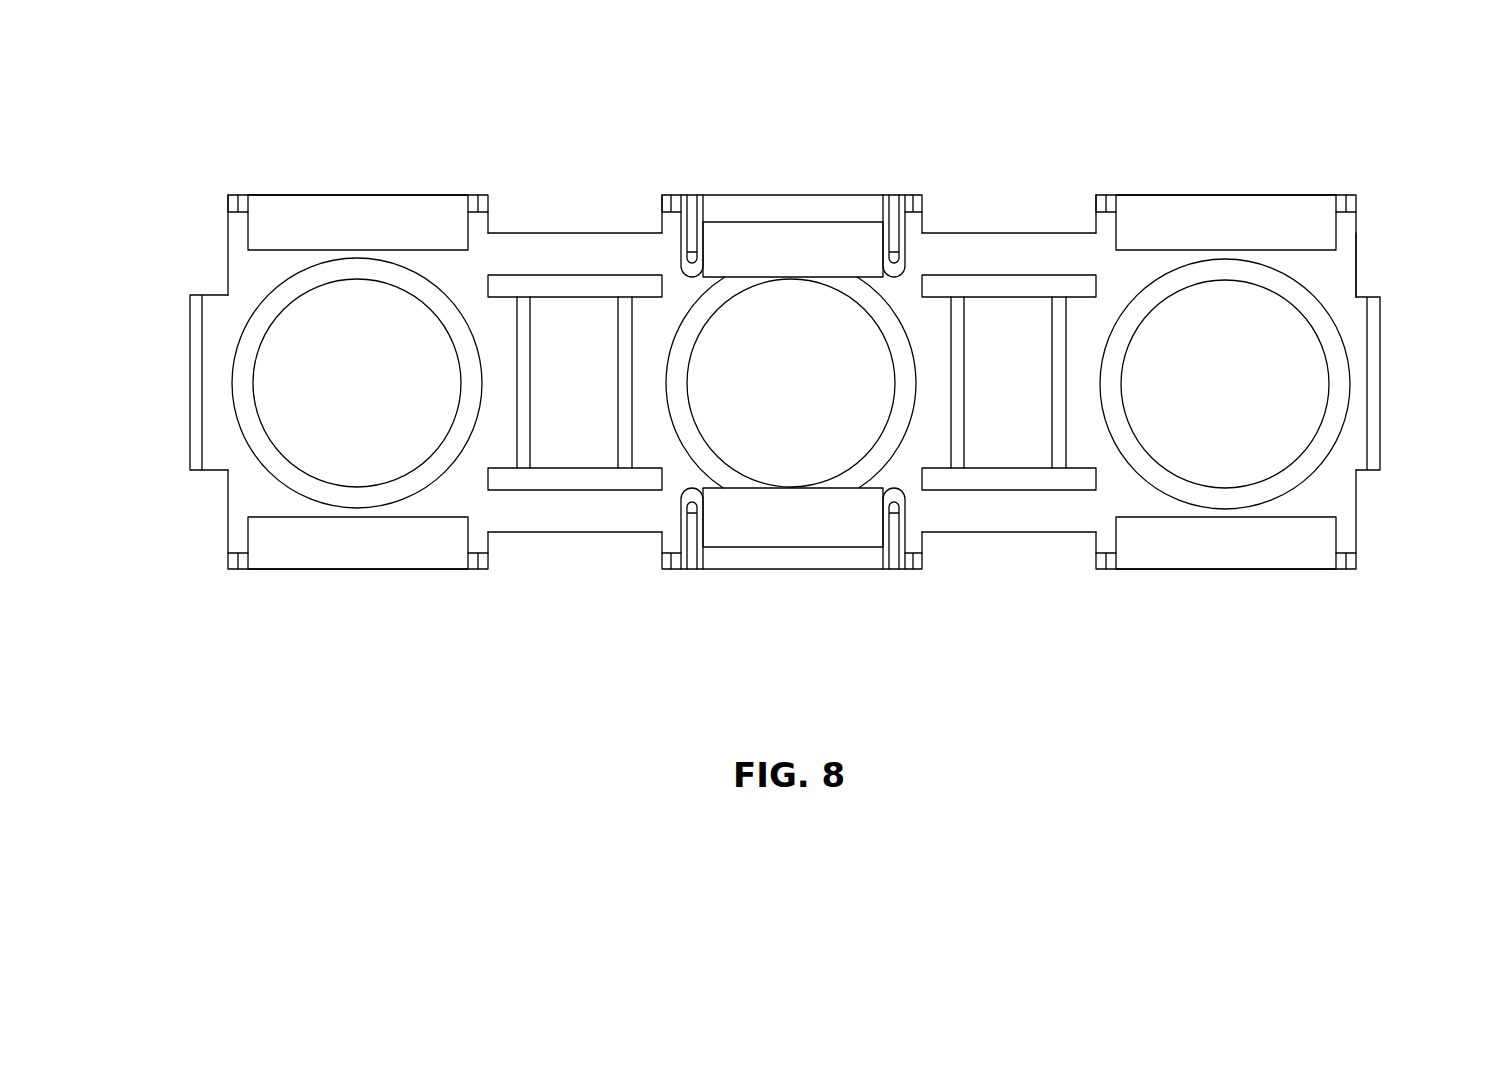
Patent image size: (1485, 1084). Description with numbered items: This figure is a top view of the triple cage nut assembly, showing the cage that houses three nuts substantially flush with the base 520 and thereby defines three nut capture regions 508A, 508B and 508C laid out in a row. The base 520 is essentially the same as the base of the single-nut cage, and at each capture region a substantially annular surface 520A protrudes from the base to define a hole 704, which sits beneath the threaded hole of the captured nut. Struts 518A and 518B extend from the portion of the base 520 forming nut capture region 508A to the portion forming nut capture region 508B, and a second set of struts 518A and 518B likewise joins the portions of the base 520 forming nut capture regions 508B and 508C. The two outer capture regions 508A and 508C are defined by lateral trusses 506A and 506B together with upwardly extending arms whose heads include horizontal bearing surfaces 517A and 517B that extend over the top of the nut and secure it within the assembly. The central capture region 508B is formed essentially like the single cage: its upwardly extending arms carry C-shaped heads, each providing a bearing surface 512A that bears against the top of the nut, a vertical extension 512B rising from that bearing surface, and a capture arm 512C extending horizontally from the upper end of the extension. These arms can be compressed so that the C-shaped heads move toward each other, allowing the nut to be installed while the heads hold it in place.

The nut capture region 508A is at (1125, 285).
The nut capture region 508B is at (691, 477).
The nut capture region 508C is at (246, 275).
The bearing surface of C-shaped head 512A is at (793, 212).
The vertical extension of C-shaped head 512B is at (693, 268).
The capture arm of C-shaped head 512C is at (847, 263).
The bearing surface 517A is at (353, 550).
The bearing surface 517B is at (377, 206).
The strut 518A is at (533, 518).
The strut 518B is at (578, 250).
The base 520 is at (1370, 246).
The annular surface 520A is at (443, 308).
The lateral truss 506A is at (523, 382).
The lateral truss 506B is at (200, 382).
The hole 704 is at (332, 395).